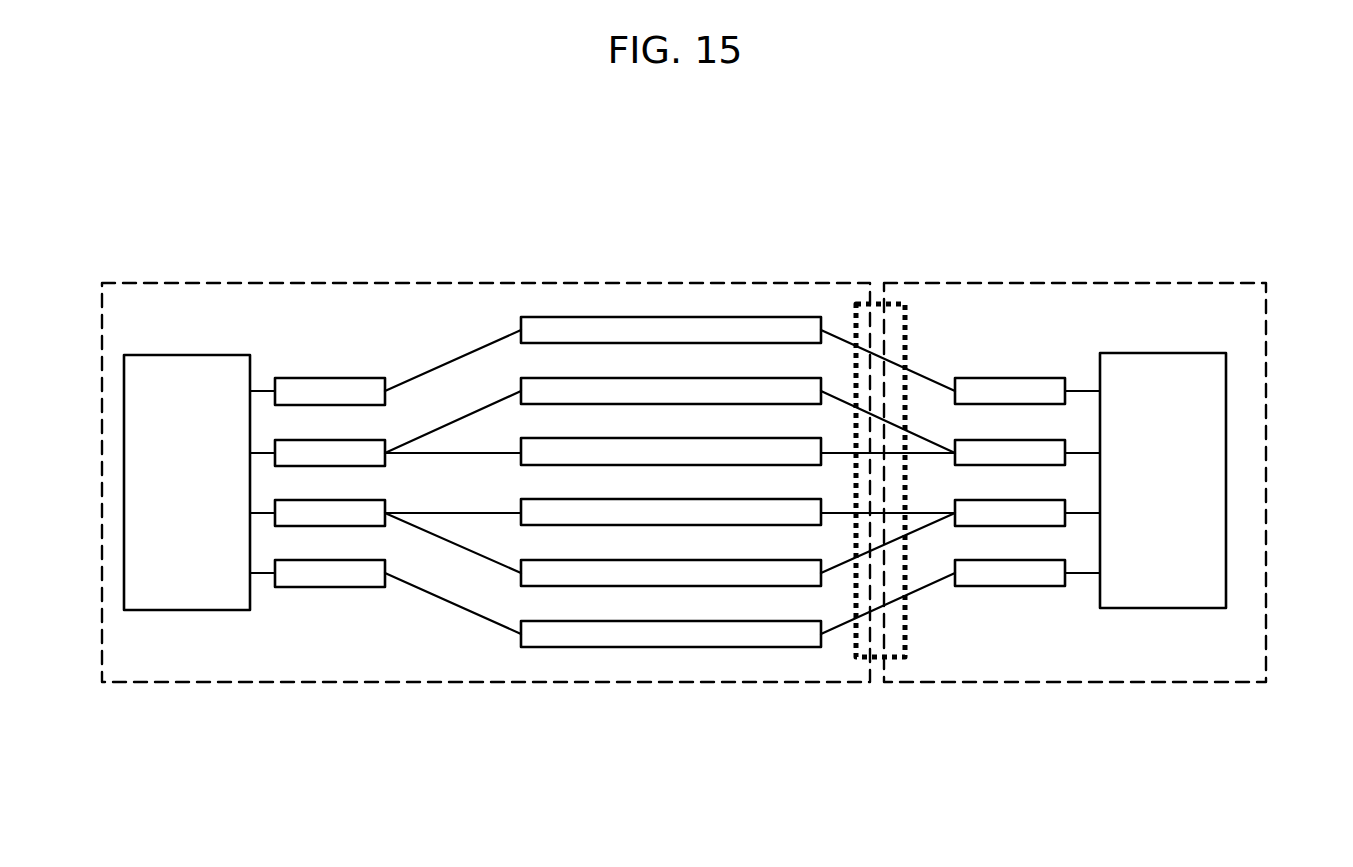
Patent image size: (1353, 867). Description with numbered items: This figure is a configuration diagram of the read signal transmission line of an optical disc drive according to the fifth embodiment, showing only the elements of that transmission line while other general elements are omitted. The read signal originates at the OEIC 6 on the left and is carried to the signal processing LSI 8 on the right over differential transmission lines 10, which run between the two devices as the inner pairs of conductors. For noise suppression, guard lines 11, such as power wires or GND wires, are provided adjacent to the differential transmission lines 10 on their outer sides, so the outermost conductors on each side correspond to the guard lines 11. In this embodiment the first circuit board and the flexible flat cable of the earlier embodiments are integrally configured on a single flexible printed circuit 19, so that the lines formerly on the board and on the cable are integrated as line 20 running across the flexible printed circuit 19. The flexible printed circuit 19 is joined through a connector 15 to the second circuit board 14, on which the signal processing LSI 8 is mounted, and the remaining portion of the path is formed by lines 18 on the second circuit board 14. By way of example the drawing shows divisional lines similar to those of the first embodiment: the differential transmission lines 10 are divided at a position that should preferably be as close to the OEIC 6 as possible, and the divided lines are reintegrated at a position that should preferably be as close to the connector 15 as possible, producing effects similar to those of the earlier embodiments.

The OEIC 6 is at (138, 355).
The signal processing LSI 8 is at (1142, 353).
The differential transmission lines 10 is at (88, 438).
The guard lines 11 is at (88, 370).
The second circuit board 14 is at (1050, 282).
The connector 15 is at (905, 305).
The lines on the second circuit board 18 is at (905, 717).
The flexible printed circuit 19 is at (665, 282).
The line 20 is at (855, 717).